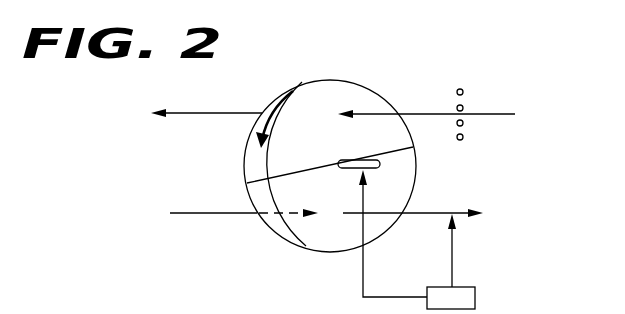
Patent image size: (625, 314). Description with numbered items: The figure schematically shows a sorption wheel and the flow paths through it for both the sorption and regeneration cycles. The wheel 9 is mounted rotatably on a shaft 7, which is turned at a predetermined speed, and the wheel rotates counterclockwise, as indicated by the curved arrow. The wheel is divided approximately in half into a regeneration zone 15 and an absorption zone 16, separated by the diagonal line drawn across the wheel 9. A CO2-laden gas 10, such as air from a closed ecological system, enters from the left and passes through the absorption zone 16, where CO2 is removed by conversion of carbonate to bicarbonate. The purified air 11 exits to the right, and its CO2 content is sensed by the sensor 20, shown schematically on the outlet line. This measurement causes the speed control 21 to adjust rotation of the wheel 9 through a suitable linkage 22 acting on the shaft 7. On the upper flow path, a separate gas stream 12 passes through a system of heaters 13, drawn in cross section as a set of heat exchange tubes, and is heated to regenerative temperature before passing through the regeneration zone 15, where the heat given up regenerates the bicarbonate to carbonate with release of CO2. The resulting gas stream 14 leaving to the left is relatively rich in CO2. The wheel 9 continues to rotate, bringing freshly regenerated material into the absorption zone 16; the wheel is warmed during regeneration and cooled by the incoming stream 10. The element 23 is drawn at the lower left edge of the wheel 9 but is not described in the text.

The nozzle 7 is at (379, 168).
The rotating drum 9 is at (303, 84).
The inlet flow line 10 is at (226, 215).
The outlet flow line 11 is at (411, 216).
The air supply line 12 is at (473, 114).
The perforations 13 is at (462, 89).
The exhaust flow line 14 is at (222, 79).
The first zone 15 is at (313, 141).
The second zone 16 is at (323, 200).
The control line 20 is at (453, 250).
The control unit 21 is at (476, 296).
The supply line 22 is at (363, 270).
The blade 23 is at (279, 213).